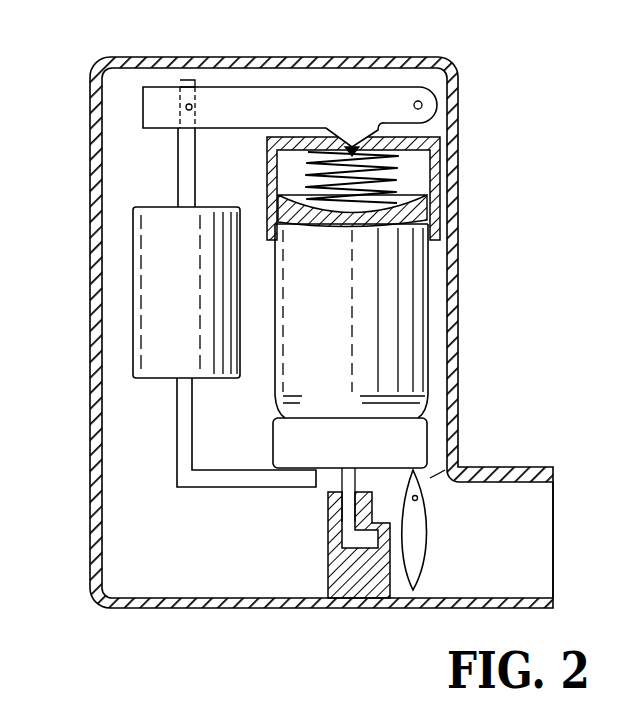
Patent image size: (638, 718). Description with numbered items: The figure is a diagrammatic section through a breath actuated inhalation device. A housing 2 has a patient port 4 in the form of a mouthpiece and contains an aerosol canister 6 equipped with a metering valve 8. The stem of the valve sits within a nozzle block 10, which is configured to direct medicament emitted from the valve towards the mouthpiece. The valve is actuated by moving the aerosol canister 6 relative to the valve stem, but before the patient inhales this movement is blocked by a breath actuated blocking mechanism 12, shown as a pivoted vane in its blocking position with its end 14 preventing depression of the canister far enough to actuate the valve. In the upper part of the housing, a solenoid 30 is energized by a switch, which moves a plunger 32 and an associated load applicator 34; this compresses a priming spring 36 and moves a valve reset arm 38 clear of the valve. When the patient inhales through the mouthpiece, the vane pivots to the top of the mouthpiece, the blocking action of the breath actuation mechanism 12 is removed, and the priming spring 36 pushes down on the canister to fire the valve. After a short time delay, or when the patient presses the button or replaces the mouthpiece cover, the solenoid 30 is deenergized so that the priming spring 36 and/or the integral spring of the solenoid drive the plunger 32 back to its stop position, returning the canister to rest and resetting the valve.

The housing 2 is at (131, 57).
The patient port 4 is at (543, 508).
The aerosol canister 6 is at (410, 306).
The metering valve 8 is at (366, 485).
The nozzle block 10 is at (350, 586).
The breath actuated blocking mechanism 12 is at (418, 553).
The end of vane 14 is at (422, 478).
The solenoid 30 is at (142, 270).
The plunger 32 is at (178, 160).
The load applicator 34 is at (367, 100).
The priming spring 36 is at (400, 162).
The valve reset arm 38 is at (245, 484).